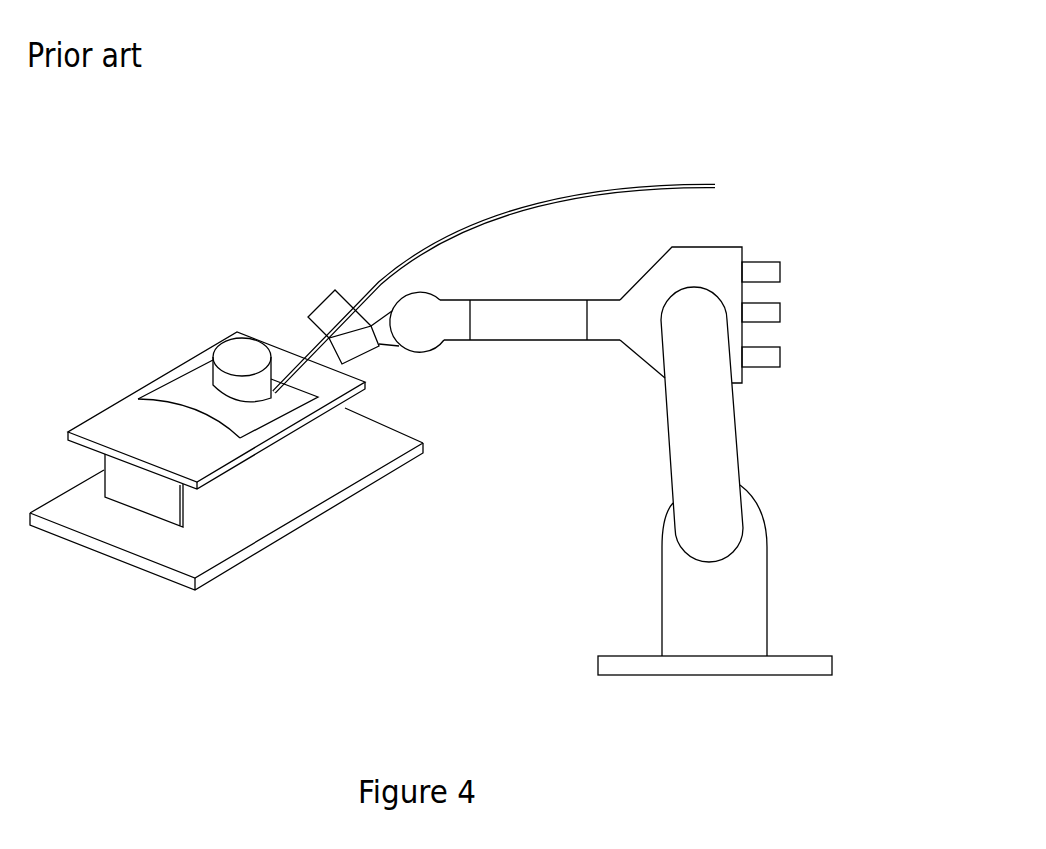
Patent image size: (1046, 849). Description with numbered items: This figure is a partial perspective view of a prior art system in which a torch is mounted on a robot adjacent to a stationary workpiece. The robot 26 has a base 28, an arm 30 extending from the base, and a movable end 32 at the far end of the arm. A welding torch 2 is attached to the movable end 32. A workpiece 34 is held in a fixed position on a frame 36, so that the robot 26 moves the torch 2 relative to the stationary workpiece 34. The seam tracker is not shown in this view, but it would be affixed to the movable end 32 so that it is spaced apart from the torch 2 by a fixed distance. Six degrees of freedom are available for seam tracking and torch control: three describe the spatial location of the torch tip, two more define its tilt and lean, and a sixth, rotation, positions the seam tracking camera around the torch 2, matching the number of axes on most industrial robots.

The welding torch 2 is at (305, 355).
The robot 26 is at (722, 243).
The base 28 is at (735, 632).
The arm 30 is at (515, 315).
The movable end 32 is at (362, 348).
The workpiece 34 is at (237, 405).
The frame 36 is at (215, 537).